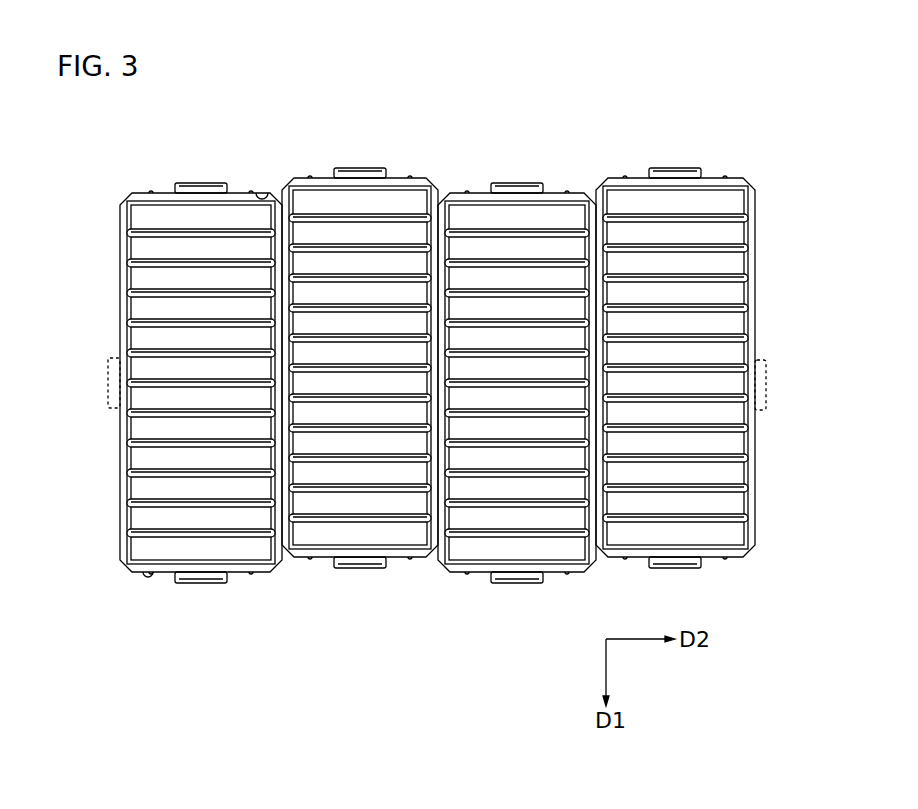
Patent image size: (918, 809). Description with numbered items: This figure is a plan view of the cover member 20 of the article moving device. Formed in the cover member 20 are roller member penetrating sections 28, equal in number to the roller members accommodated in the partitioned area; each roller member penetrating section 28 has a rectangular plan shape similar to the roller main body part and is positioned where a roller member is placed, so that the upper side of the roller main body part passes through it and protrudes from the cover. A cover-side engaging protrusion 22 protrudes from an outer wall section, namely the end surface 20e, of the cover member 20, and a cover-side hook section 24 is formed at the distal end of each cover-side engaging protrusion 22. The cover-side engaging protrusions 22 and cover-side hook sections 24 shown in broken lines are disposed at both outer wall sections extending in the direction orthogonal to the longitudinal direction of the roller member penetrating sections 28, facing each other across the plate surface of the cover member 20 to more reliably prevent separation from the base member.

The cover member 20 is at (518, 150).
The end surface 20e is at (259, 197).
The cover-side engaging protrusion 22 is at (176, 192).
The cover-side hook section 24 is at (200, 184).
The roller member penetrating section 28 is at (256, 555).